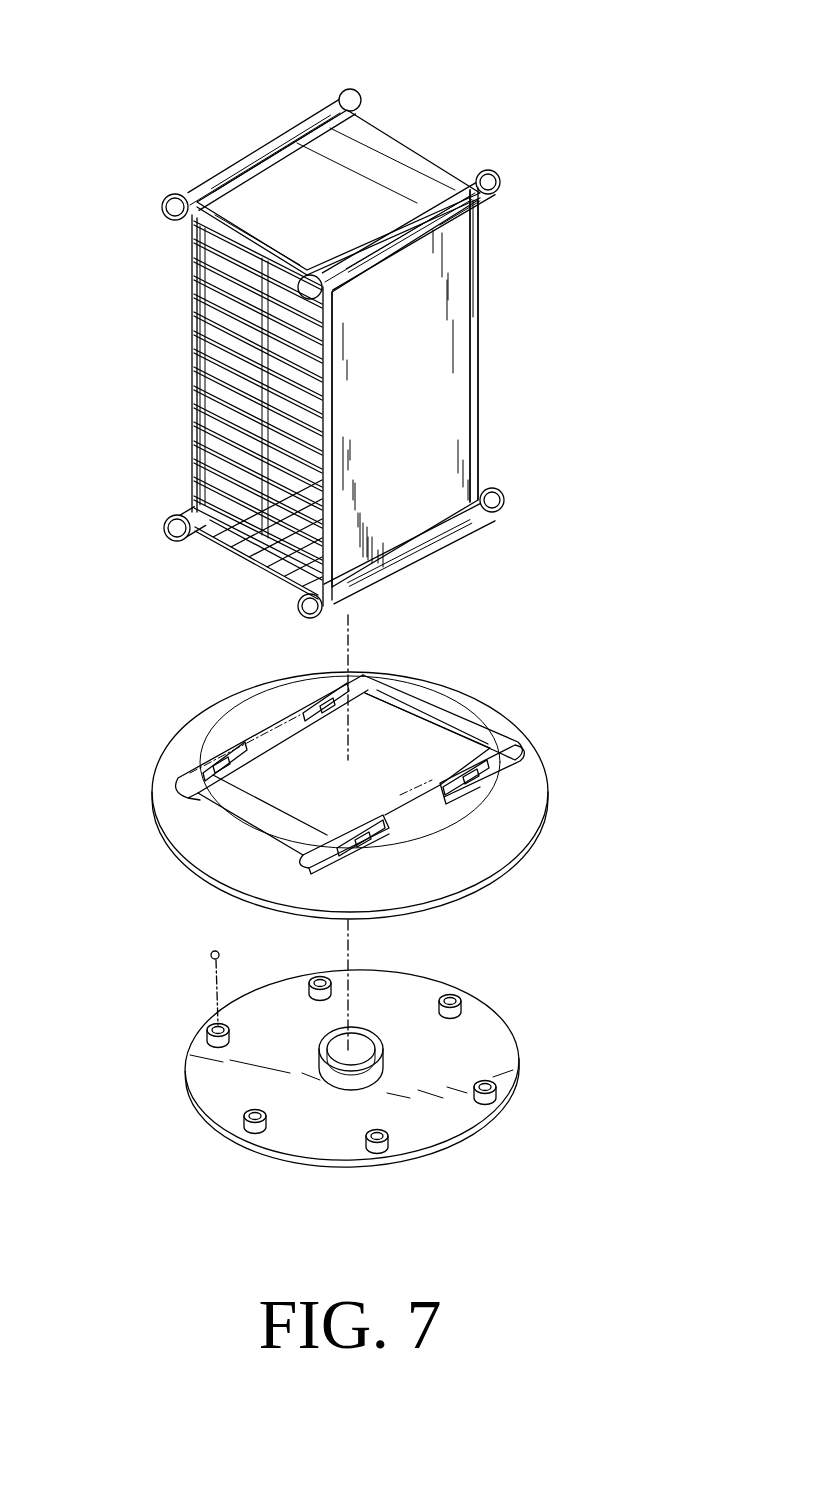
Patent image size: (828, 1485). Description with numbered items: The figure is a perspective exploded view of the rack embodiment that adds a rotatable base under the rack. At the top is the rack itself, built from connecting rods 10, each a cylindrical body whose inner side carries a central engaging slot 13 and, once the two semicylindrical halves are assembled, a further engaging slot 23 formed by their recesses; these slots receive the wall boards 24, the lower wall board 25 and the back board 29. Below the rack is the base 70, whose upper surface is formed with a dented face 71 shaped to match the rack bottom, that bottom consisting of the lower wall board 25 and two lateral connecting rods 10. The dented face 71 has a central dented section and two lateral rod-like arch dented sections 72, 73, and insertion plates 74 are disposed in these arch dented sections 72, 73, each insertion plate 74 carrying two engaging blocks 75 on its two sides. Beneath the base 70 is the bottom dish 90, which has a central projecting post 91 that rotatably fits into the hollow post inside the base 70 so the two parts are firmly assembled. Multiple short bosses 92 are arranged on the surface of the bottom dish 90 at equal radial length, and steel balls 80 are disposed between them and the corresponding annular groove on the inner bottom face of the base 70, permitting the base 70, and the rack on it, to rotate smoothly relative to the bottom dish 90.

The connecting rod 10 is at (245, 152).
The engaging slot 13 is at (463, 217).
The engaging slot 23 is at (315, 100).
The wall board 24 is at (190, 332).
The lower wall board 25 is at (395, 140).
The back board 29 is at (478, 352).
The base 70 is at (500, 860).
The dented face 71 is at (410, 737).
The arch dented section 72 is at (377, 674).
The arch dented section 73 is at (505, 752).
The insertion plate 74 is at (210, 757).
The engaging block 75 is at (322, 700).
The steel ball 80 is at (210, 955).
The bottom dish 90 is at (440, 1140).
The central projecting post 91 is at (362, 1075).
The short boss 92 is at (497, 1093).